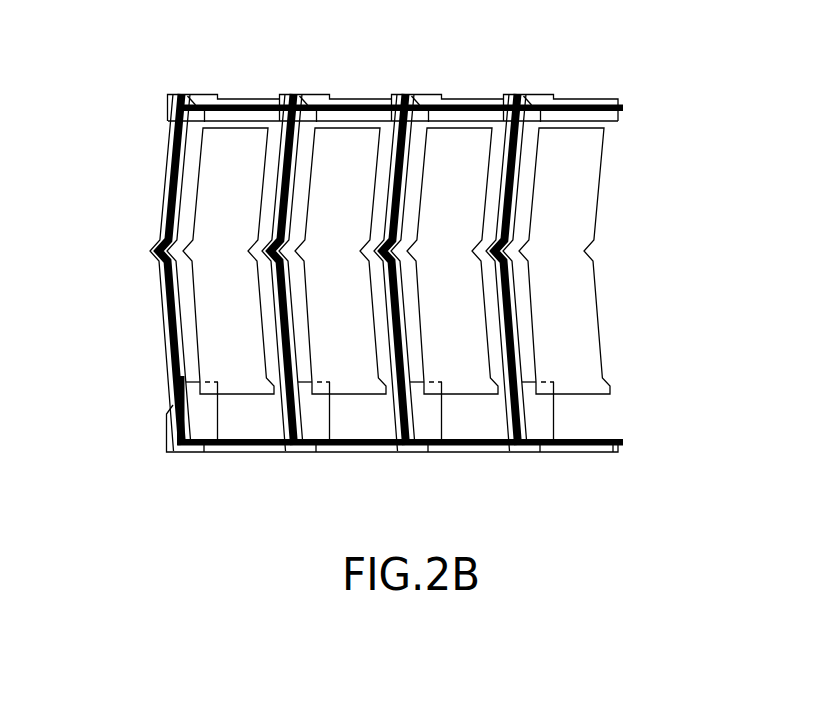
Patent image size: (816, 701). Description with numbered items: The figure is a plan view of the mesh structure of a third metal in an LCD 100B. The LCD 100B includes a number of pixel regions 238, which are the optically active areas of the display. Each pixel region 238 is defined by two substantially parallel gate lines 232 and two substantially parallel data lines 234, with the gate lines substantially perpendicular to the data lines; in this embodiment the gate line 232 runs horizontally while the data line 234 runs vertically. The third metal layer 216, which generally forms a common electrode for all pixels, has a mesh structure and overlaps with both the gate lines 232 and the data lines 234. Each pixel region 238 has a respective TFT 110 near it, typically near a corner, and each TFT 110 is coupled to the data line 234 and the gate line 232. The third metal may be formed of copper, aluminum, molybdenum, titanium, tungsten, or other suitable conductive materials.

The LCD 100B is at (140, 80).
The gate line 232 is at (624, 113).
The data line 234 is at (127, 178).
The pixel region 238 is at (590, 163).
The TFT 110 is at (434, 428).
The third metal layer 216 is at (213, 446).